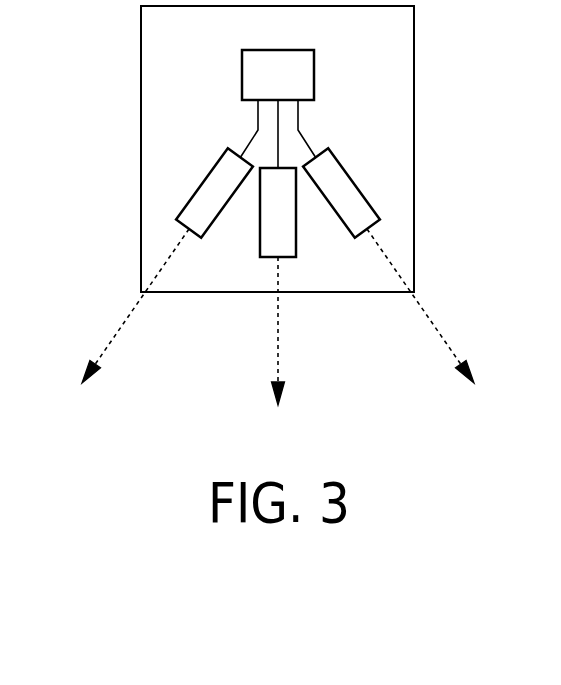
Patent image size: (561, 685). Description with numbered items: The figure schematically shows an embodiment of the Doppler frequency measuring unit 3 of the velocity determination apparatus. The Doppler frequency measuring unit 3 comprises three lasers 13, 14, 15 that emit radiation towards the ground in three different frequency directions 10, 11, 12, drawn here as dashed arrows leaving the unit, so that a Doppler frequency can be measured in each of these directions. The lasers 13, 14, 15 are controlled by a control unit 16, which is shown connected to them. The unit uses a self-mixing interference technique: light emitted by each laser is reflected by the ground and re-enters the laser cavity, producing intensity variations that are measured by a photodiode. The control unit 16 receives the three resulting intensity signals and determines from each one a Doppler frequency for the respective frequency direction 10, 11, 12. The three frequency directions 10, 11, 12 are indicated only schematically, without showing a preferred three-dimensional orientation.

The Doppler frequency measuring unit 3 is at (414, 132).
The frequency direction 10 is at (122, 328).
The frequency direction 11 is at (278, 350).
The frequency direction 12 is at (433, 328).
The laser 13 is at (200, 192).
The laser 14 is at (260, 242).
The laser 15 is at (372, 200).
The control unit 16 is at (314, 72).